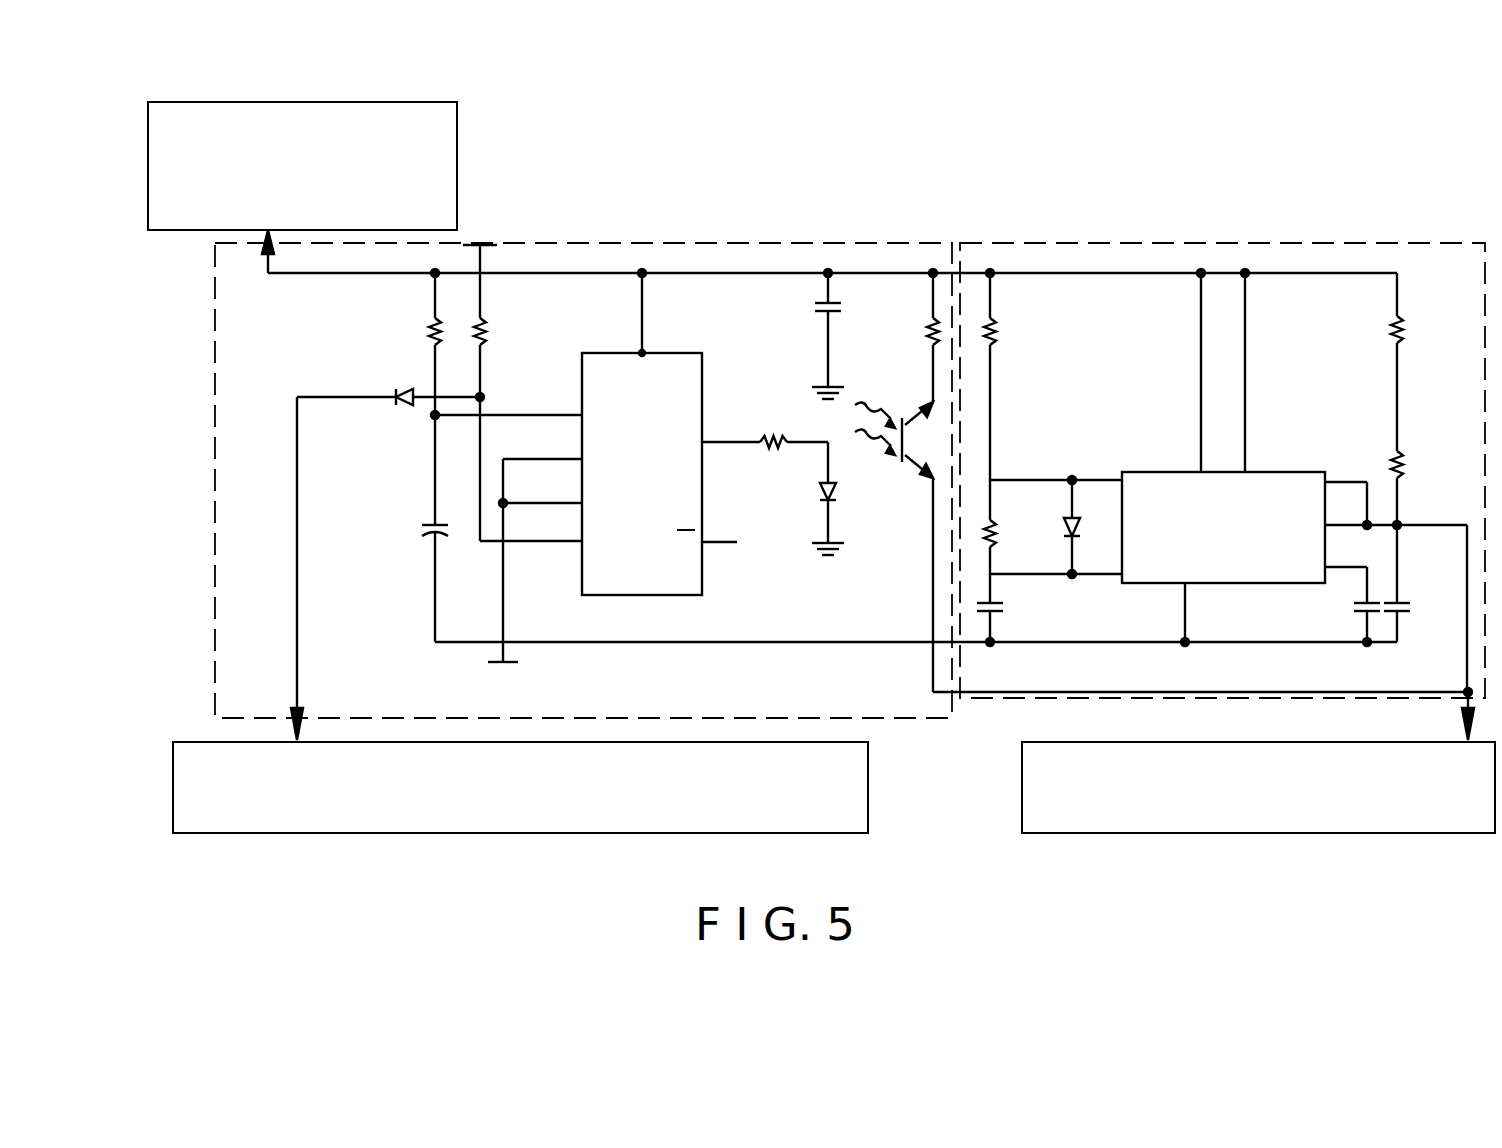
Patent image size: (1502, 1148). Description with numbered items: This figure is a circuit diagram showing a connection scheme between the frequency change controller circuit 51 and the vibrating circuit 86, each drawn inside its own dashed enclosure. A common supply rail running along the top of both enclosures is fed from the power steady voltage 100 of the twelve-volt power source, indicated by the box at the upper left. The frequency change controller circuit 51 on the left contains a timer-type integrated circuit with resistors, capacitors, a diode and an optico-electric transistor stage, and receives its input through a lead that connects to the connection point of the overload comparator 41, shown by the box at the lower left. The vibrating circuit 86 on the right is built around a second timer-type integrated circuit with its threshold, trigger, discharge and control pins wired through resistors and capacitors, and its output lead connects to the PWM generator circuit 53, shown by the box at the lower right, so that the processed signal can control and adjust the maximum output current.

The power steady voltage 100 is at (435, 162).
The frequency change controller circuit 51 is at (782, 260).
The vibrating circuit 86 is at (1193, 260).
The overload comparator 41 is at (600, 803).
The PWM generator circuit 53 is at (1430, 815).